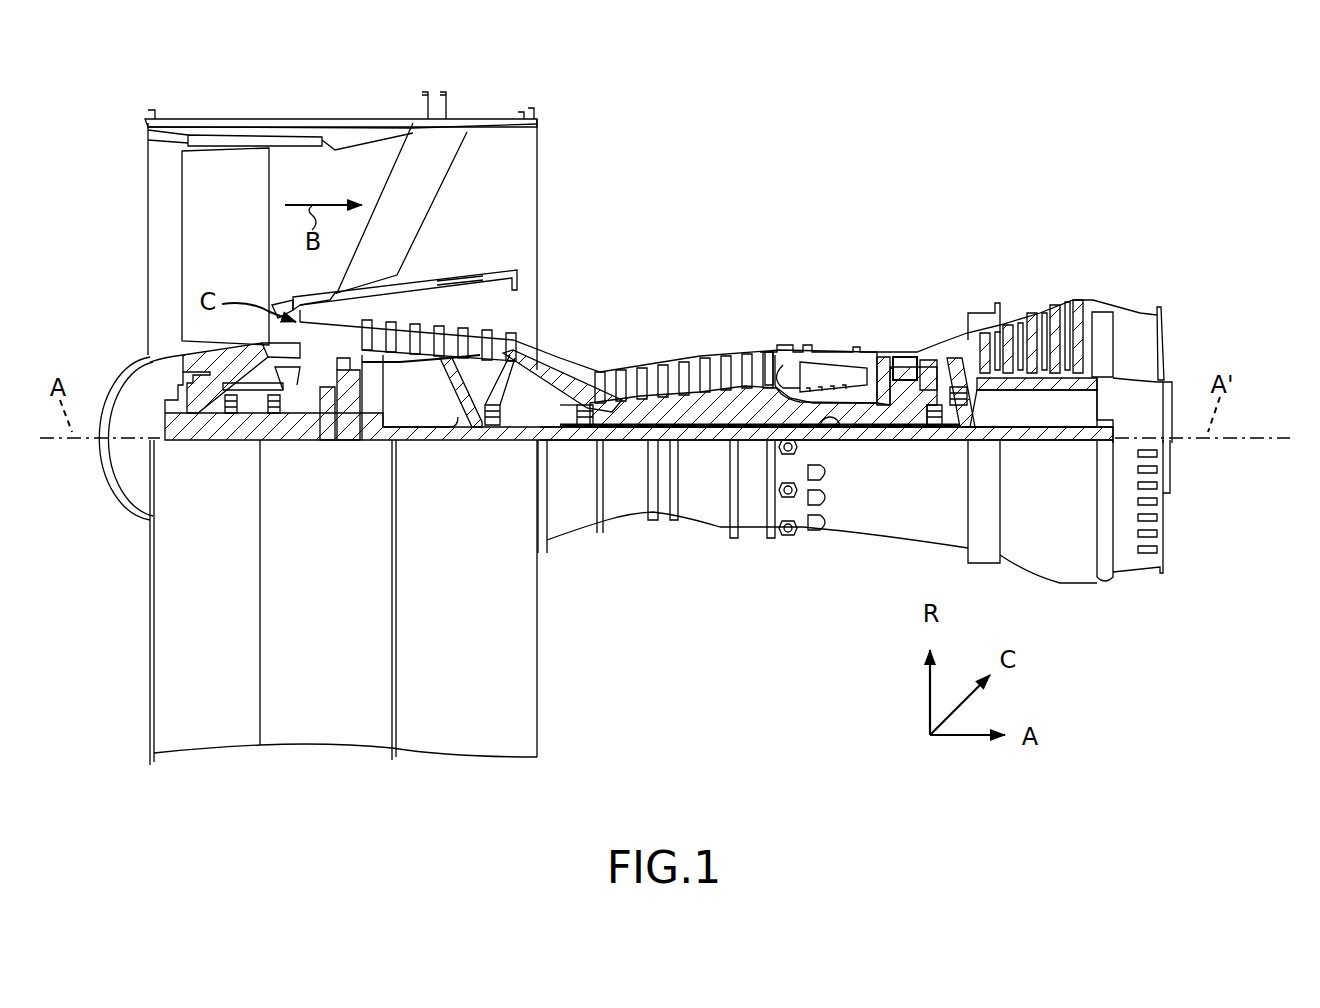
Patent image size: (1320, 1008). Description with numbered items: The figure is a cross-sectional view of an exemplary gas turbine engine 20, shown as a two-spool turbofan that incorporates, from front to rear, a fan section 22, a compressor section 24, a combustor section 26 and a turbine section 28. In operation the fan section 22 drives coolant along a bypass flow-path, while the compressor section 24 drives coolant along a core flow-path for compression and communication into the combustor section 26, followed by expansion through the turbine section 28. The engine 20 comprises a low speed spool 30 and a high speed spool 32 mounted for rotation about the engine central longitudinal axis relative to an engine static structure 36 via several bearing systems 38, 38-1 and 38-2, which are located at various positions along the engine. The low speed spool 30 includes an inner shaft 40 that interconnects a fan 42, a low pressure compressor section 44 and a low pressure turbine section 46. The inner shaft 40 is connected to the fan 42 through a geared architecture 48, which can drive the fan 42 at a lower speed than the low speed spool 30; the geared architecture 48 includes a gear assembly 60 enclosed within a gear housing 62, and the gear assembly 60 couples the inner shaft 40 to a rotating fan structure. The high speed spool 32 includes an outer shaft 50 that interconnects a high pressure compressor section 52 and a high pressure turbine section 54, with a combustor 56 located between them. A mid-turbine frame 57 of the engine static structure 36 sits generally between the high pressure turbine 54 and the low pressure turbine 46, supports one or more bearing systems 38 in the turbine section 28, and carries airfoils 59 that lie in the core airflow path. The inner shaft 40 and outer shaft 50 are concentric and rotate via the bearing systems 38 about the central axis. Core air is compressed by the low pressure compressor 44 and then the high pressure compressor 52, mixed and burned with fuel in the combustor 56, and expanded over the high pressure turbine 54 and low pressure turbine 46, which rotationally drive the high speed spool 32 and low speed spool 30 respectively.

The gas turbine engine 20 is at (881, 160).
The fan section 22 is at (390, 101).
The compressor section 24 is at (398, 240).
The combustor section 26 is at (885, 240).
The turbine section 28 is at (1102, 240).
The low speed spool 30 is at (712, 452).
The high speed spool 32 is at (750, 407).
The engine static structure 36 is at (325, 728).
The bearing system 38 is at (944, 440).
The bearing system 38-1 is at (236, 428).
The bearing system 38-2 is at (487, 427).
The inner shaft 40 is at (562, 440).
The fan 42 is at (208, 251).
The low pressure compressor section 44 is at (490, 332).
The low pressure turbine section 46 is at (1033, 320).
The geared architecture 48 is at (354, 456).
The outer shaft 50 is at (832, 420).
The high pressure compressor section 52 is at (690, 406).
The high pressure turbine section 54 is at (900, 355).
The combustor 56 is at (824, 376).
The mid-turbine frame 57 is at (930, 372).
The airfoils 59 is at (950, 352).
The gear assembly 60 is at (358, 425).
The gear housing 62 is at (358, 388).